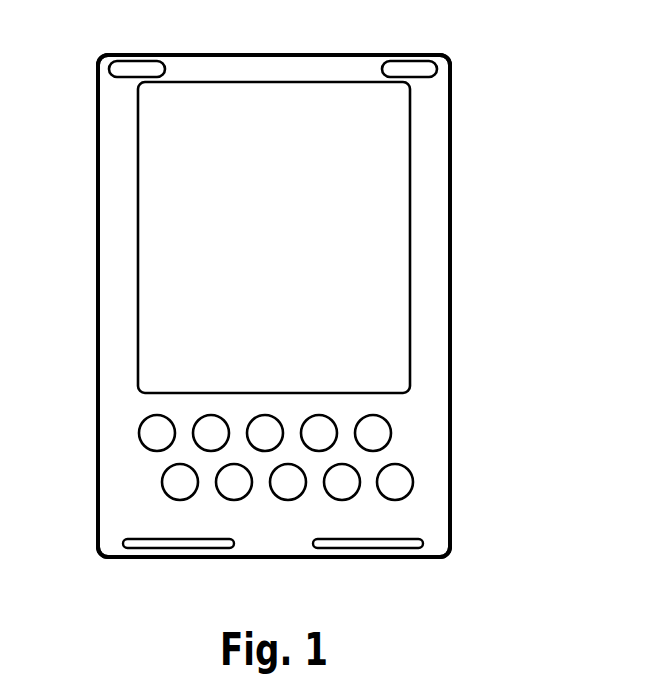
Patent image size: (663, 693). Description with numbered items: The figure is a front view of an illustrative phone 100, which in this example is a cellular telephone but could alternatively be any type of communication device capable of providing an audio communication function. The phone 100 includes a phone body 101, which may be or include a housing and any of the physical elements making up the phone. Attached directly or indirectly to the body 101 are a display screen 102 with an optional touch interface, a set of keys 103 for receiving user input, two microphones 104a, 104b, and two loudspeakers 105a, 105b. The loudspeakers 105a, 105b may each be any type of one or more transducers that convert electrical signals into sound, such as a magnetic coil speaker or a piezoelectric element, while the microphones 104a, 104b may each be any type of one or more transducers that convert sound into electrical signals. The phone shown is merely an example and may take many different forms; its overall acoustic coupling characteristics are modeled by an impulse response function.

The phone 100 is at (530, 73).
The phone body 101 is at (97, 368).
The display screen 102 is at (152, 192).
The keys 103 is at (138, 440).
The microphone 104a is at (152, 544).
The microphone 104b is at (340, 544).
The loudspeaker 105a is at (128, 65).
The loudspeaker 105b is at (398, 65).